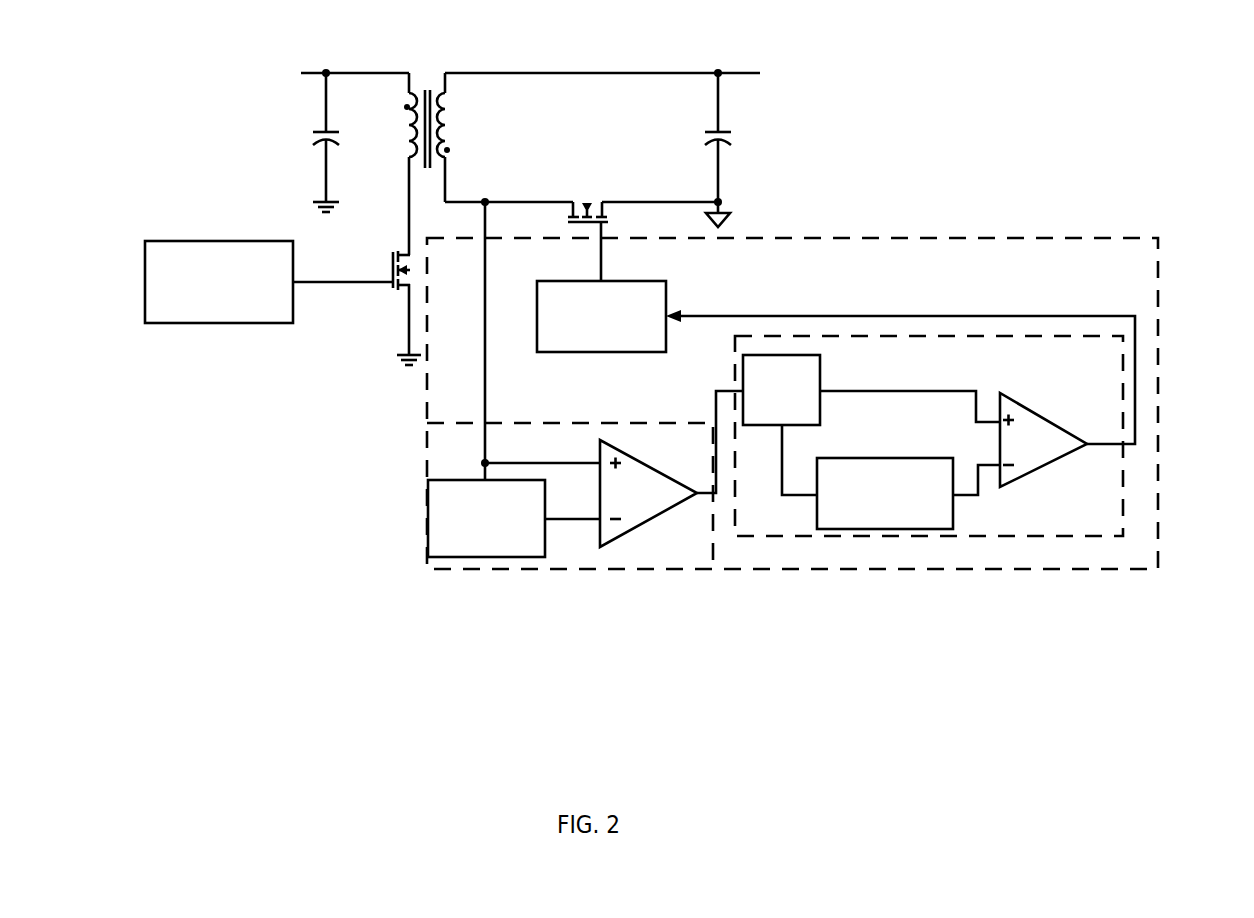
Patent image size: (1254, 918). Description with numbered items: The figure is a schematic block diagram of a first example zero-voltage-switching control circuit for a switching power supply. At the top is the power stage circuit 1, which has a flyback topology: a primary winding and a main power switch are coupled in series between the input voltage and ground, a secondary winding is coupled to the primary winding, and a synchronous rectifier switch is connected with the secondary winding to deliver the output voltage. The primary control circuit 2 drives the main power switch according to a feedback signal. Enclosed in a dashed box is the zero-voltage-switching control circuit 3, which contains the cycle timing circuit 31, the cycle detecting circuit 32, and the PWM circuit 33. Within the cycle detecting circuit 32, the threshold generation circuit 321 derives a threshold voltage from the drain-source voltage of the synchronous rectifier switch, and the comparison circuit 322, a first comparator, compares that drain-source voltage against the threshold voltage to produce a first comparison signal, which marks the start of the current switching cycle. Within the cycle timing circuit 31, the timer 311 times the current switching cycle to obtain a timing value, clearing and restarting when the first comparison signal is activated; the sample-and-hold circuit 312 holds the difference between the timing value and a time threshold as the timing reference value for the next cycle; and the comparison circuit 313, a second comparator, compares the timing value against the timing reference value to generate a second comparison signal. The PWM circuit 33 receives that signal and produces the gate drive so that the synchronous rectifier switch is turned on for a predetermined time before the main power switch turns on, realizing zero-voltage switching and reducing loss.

The power stage circuit 1 is at (797, 36).
The primary control circuit 2 is at (258, 323).
The zero-voltage-switching control circuit 3 is at (1087, 569).
The cycle timing circuit 31 is at (1122, 510).
The cycle detecting circuit 32 is at (587, 423).
The PWM circuit 33 is at (588, 342).
The timer 311 is at (805, 425).
The sample-and-hold circuit 312 is at (912, 458).
The comparison circuit 313 is at (1027, 477).
The threshold generation circuit 321 is at (498, 542).
The comparison circuit 322 is at (656, 514).